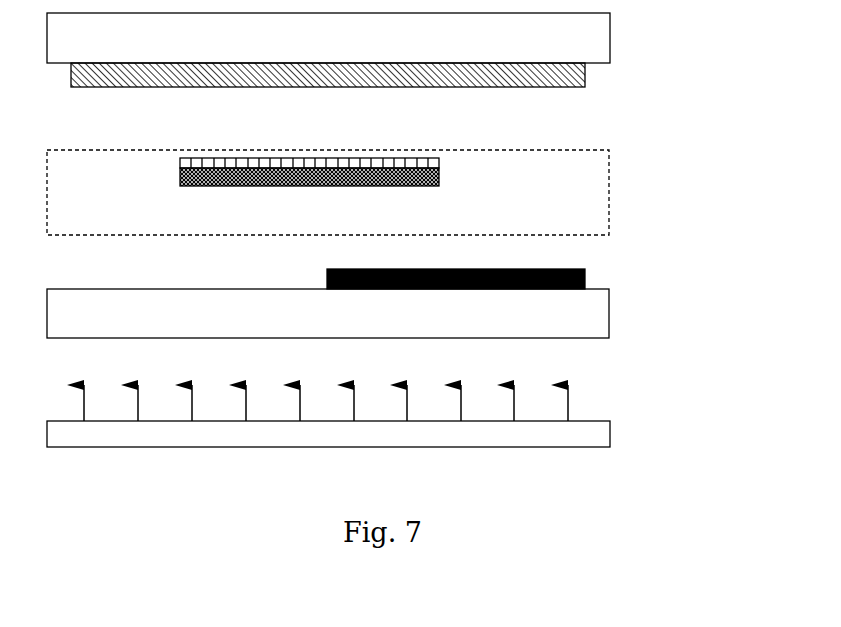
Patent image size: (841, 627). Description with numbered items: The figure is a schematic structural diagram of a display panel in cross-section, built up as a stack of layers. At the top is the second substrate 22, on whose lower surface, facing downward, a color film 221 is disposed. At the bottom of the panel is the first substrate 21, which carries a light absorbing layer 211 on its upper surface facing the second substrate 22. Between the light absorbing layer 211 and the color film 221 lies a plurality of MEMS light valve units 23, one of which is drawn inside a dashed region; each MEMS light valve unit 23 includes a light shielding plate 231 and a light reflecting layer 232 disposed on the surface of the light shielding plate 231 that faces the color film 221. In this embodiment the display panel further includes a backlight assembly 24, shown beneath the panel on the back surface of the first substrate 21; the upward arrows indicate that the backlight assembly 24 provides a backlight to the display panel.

The second substrate 22 is at (610, 41).
The color film 221 is at (585, 77).
The MEMS light valve unit 23 is at (609, 195).
The light shielding plate 231 is at (240, 186).
The light reflecting layer 232 is at (293, 160).
The light absorbing layer 211 is at (585, 277).
The first substrate 21 is at (609, 313).
The backlight assembly 24 is at (610, 436).